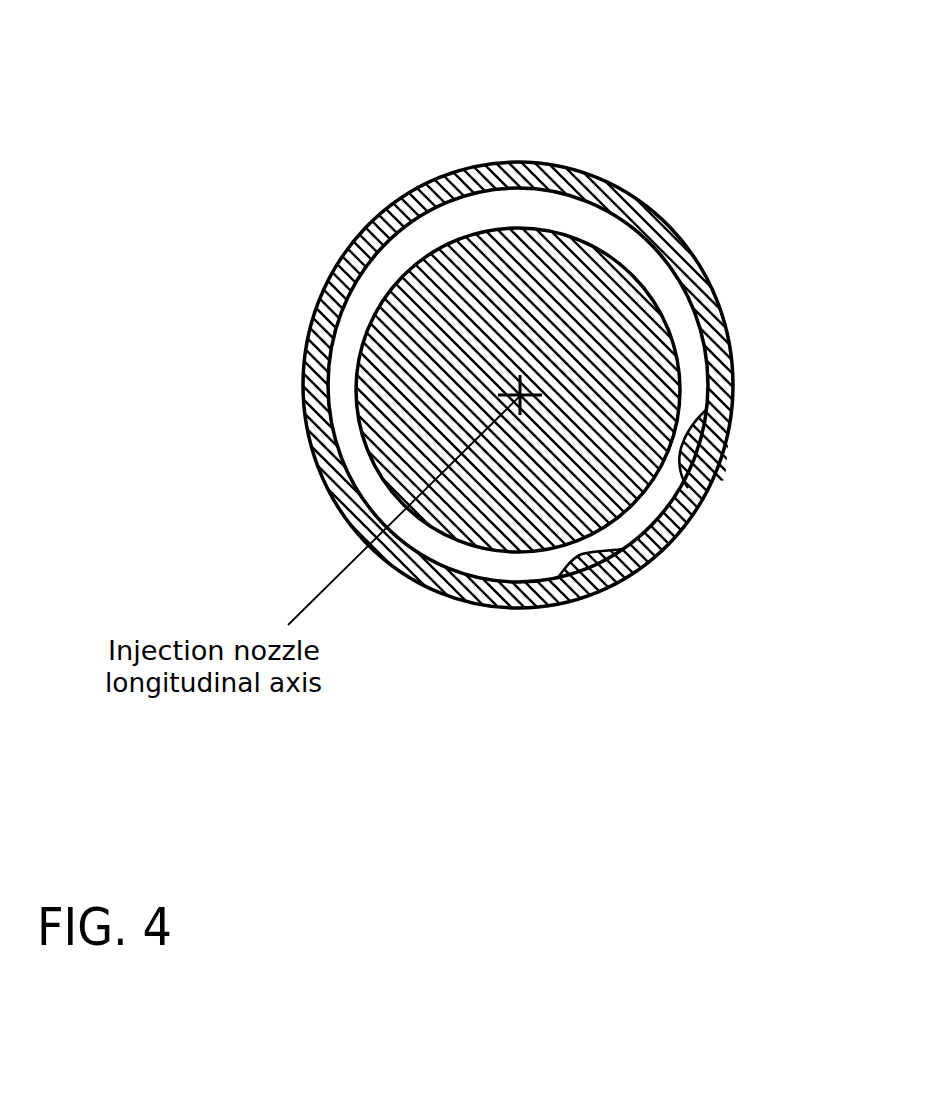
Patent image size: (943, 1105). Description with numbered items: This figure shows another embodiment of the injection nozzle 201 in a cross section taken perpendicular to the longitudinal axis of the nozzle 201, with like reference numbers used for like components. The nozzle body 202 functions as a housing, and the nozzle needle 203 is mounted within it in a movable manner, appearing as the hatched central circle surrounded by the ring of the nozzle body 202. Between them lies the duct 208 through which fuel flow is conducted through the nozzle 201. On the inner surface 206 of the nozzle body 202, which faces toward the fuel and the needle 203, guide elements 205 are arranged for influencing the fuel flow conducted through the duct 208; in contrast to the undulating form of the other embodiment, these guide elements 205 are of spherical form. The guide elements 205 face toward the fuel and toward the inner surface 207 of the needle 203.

The injection nozzle 201 is at (673, 104).
The nozzle body 202 is at (395, 203).
The nozzle needle 203 is at (423, 292).
The guide elements 205 is at (722, 463).
The inner surface 206 is at (517, 192).
The inner surface 207 is at (355, 410).
The duct 208 is at (337, 377).